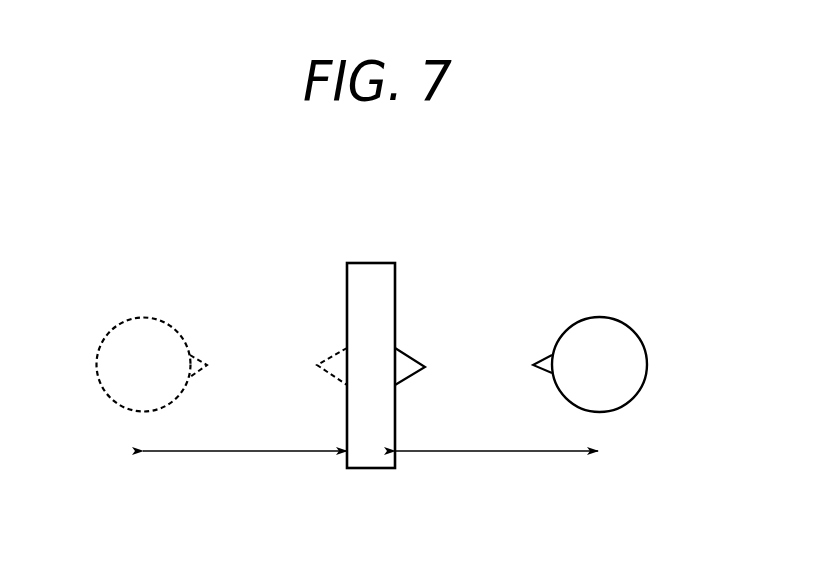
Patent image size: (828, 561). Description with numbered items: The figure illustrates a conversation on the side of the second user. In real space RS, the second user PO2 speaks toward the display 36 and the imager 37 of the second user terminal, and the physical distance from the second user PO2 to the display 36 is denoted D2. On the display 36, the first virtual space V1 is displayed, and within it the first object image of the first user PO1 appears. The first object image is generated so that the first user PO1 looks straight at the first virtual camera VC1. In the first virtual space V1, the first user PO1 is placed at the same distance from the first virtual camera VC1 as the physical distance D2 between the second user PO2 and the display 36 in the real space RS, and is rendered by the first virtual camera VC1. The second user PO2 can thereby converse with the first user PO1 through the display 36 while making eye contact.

The display 36 is at (372, 458).
The imager 37 is at (403, 363).
The first user PO1 is at (142, 317).
The second user PO2 is at (597, 317).
The first virtual camera VC1 is at (328, 357).
The first virtual space V1 is at (223, 237).
The real space RS is at (531, 232).
The physical distance D2 is at (370, 436).